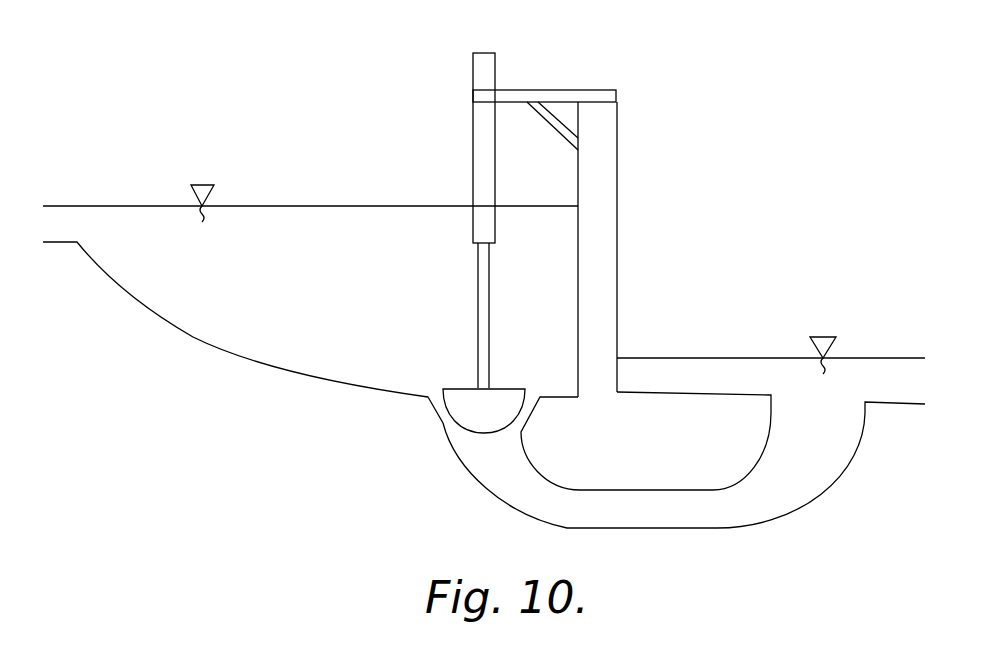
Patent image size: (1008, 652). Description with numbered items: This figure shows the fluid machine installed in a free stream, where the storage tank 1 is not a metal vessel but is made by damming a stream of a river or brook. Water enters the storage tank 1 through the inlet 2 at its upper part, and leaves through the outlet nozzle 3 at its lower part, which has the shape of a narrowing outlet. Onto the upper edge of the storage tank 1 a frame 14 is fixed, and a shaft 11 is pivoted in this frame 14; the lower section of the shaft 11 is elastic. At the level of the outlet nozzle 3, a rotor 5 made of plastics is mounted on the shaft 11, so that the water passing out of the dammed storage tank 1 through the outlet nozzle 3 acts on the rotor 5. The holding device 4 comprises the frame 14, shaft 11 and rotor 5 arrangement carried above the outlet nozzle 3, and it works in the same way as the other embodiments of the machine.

The storage tank 1 is at (193, 337).
The inlet 2 is at (66, 220).
The outlet nozzle 3 is at (437, 418).
The holding device 4 is at (513, 60).
The rotor 5 is at (455, 433).
The shaft 11 is at (483, 162).
The frame 14 is at (575, 97).